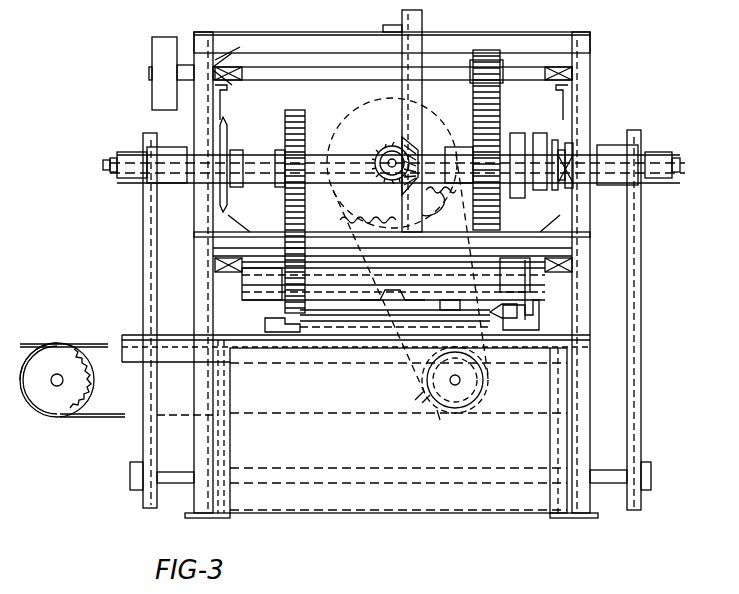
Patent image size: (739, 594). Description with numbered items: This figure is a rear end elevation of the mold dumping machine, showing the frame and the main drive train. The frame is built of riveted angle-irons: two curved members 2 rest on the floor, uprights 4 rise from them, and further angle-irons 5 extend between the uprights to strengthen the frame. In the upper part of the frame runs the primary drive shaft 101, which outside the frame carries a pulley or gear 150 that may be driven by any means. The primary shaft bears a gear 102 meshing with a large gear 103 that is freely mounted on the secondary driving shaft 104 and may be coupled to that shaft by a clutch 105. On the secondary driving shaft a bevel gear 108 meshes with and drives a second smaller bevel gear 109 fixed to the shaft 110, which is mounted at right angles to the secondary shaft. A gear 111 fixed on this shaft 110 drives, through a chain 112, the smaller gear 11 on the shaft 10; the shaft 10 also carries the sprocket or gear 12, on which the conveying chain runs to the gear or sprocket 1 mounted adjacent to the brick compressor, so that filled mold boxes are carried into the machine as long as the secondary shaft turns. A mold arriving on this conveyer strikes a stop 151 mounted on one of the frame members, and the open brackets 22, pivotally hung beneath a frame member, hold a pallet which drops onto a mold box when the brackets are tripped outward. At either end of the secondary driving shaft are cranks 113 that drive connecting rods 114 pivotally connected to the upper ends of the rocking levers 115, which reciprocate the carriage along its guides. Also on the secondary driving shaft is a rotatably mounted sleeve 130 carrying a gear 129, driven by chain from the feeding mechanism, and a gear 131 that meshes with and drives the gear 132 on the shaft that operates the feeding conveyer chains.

The gear or sprocket 1 is at (62, 402).
The curved members 2 is at (208, 515).
The uprights 4 is at (194, 298).
The angle-irons 5 is at (311, 50).
The shaft 10 is at (470, 388).
The gear 11 is at (420, 403).
The sprocket or gear 12 is at (443, 428).
The open brackets 22 is at (410, 296).
The primary drive shaft 101 is at (458, 78).
The gear 102 is at (486, 62).
The large gear 103 is at (492, 132).
The secondary driving shaft 104 is at (573, 160).
The clutch 105 is at (560, 195).
The bevel gear 108 is at (437, 201).
The second smaller bevel gear 109 is at (391, 146).
The shaft 110 is at (392, 163).
The gear 111 is at (348, 196).
The chain 112 is at (398, 322).
The cranks 113 is at (168, 147).
The connecting rods 114 is at (132, 180).
The rocking levers 115 is at (145, 262).
The gear 129 is at (229, 132).
The sleeve 130 is at (257, 159).
The gear 131 is at (309, 202).
The gear 132 is at (300, 326).
The pulley or gear 150 is at (152, 52).
The stop 151 is at (522, 314).